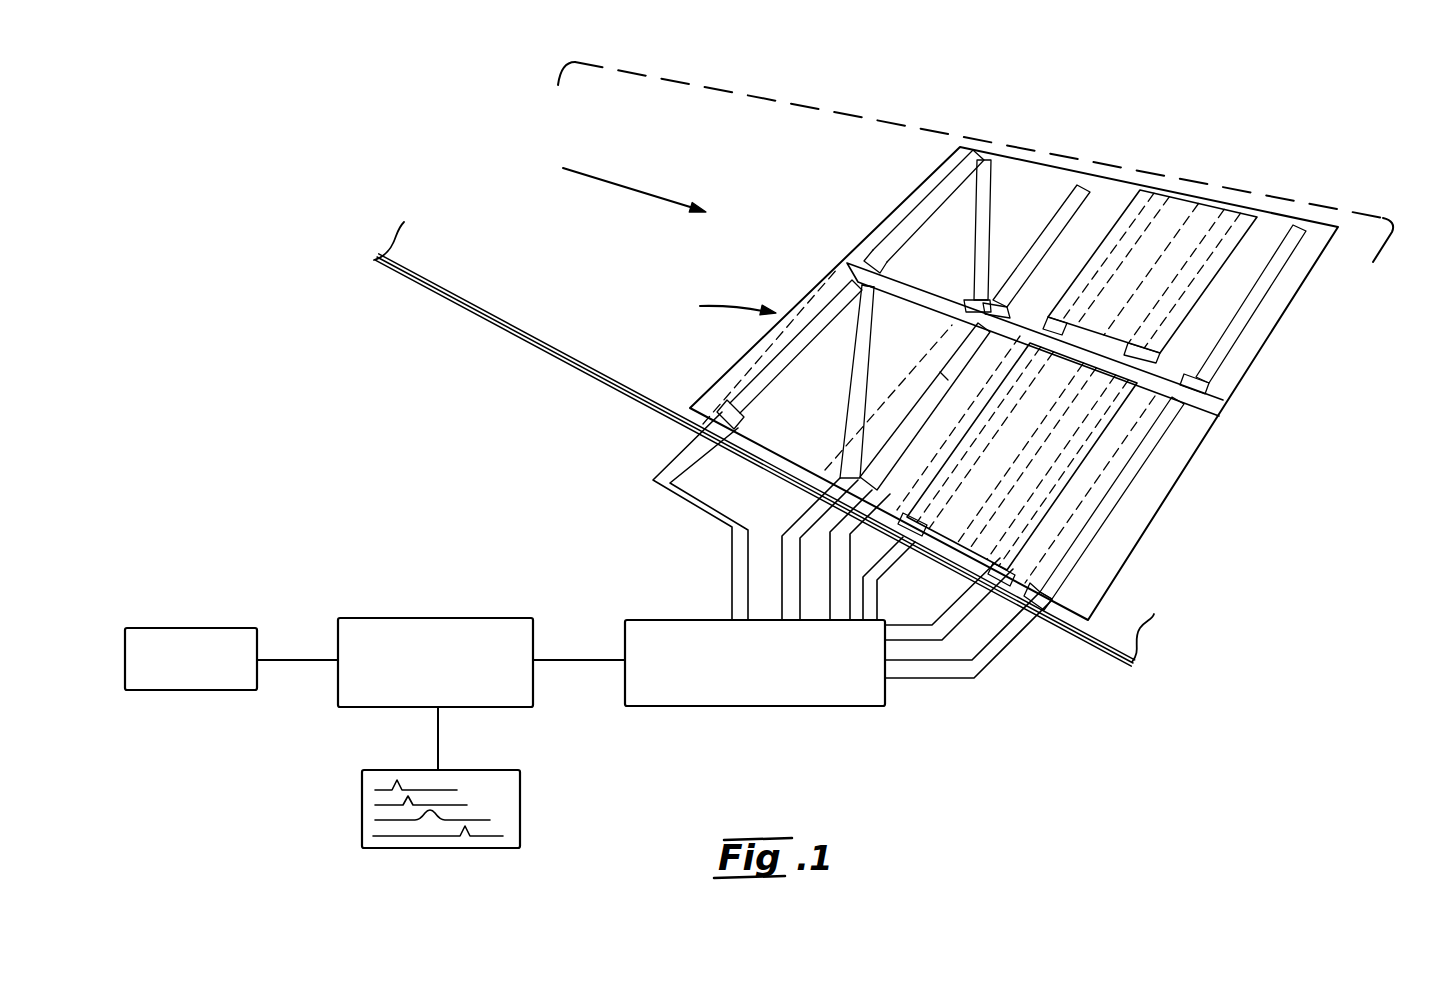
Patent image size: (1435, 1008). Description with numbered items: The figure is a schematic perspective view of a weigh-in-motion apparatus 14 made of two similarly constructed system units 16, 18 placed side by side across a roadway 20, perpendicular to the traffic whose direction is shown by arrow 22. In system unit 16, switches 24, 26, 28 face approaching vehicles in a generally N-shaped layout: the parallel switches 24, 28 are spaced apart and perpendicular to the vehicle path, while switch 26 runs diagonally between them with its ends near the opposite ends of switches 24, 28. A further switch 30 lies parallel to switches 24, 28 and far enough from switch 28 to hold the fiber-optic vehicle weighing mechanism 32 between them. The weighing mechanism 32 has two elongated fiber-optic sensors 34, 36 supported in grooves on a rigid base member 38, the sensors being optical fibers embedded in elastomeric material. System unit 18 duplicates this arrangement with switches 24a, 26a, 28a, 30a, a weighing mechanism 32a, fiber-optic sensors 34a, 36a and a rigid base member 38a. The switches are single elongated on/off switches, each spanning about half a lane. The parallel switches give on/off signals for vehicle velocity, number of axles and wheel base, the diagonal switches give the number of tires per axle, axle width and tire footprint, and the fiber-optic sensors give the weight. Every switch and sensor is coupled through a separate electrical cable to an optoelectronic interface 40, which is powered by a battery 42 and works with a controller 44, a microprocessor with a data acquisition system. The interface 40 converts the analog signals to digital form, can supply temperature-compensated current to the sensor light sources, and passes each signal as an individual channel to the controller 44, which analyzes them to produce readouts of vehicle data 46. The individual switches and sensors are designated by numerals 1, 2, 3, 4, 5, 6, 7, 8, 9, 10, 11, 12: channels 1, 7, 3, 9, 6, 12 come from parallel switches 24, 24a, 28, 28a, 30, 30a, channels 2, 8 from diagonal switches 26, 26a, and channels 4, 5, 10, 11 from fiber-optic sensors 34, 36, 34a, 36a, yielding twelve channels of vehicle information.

The channel 1 is at (748, 411).
The channel 2 is at (866, 318).
The channel 3 is at (940, 374).
The channel 4 is at (963, 466).
The channel 5 is at (1060, 441).
The channel 6 is at (1163, 434).
The channel 7 is at (889, 258).
The channel 8 is at (982, 252).
The channel 9 is at (1073, 190).
The channel 10 is at (1135, 234).
The channel 11 is at (1196, 270).
The channel 12 is at (1222, 340).
The weigh-in-motion apparatus 14 is at (719, 306).
The system unit 16 is at (822, 283).
The system unit 18 is at (928, 178).
The roadway 20 is at (482, 293).
The arrow 22 is at (619, 185).
The switch 24 is at (763, 386).
The switch 26 is at (862, 354).
The switch 28 is at (970, 333).
The switch 30 is at (1135, 468).
The fiber-optic vehicle weighing mechanism 32 is at (1022, 456).
The fiber-optic sensor 34 is at (950, 492).
The fiber-optic sensor 36 is at (1083, 405).
The rigid base member 38 is at (1065, 495).
The switch 24a is at (896, 255).
The switch 26a is at (977, 200).
The switch 28a is at (1043, 237).
The switch 30a is at (1253, 298).
The fiber-optic vehicle weighing mechanism 32a is at (1160, 270).
The fiber-optic sensor 34a is at (1082, 306).
The fiber-optic sensor 36a is at (1203, 245).
The rigid base member 38a is at (1118, 218).
The optoelectronic interface 40 is at (765, 708).
The battery 42 is at (181, 628).
The controller 44 is at (424, 618).
The vehicle data 46 is at (522, 808).